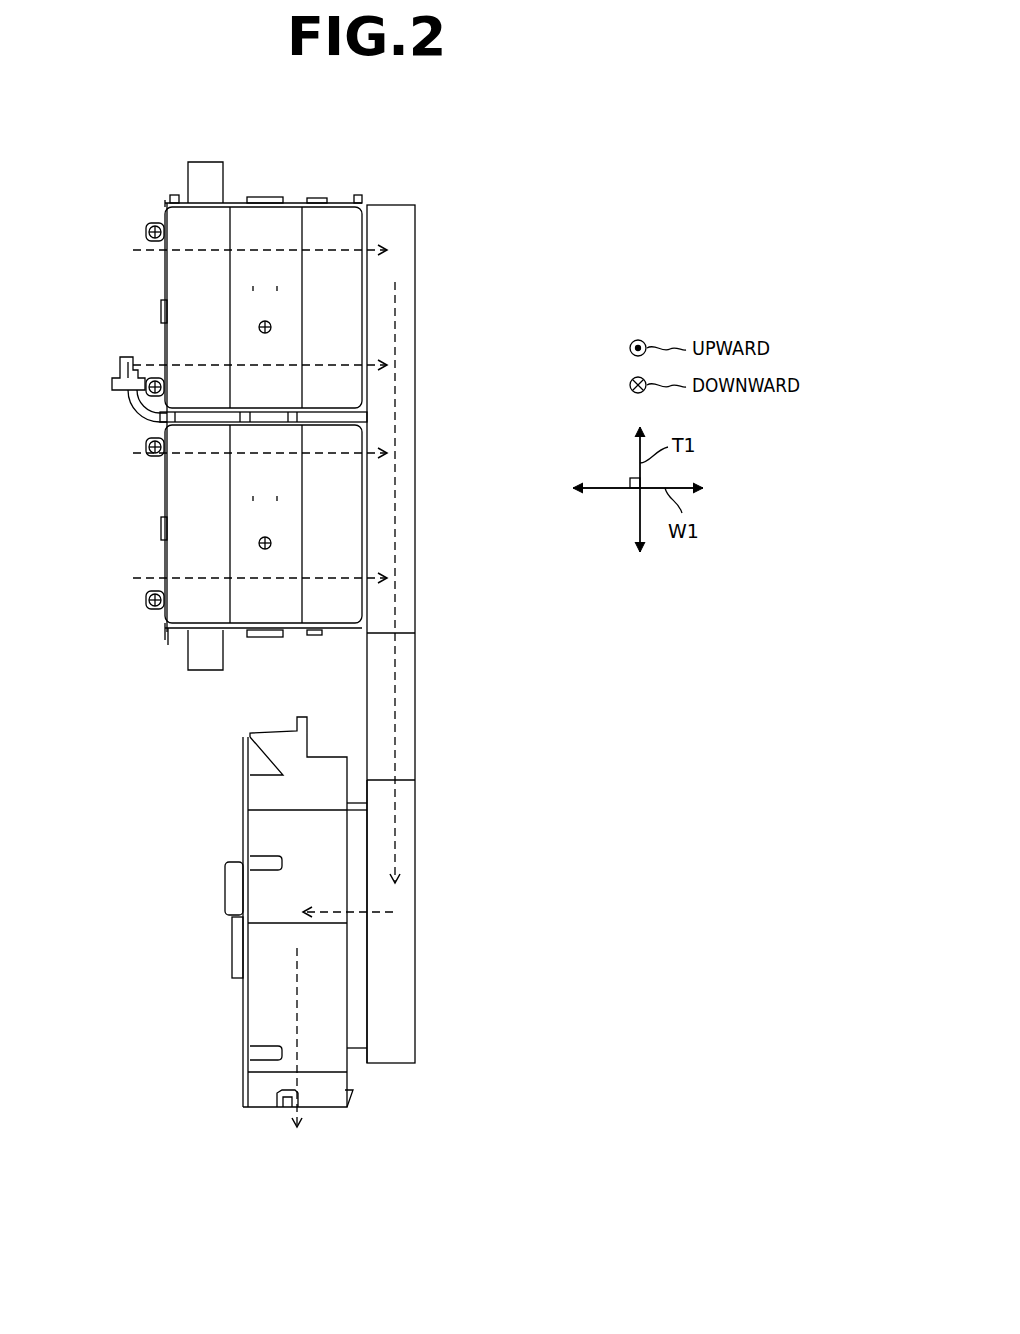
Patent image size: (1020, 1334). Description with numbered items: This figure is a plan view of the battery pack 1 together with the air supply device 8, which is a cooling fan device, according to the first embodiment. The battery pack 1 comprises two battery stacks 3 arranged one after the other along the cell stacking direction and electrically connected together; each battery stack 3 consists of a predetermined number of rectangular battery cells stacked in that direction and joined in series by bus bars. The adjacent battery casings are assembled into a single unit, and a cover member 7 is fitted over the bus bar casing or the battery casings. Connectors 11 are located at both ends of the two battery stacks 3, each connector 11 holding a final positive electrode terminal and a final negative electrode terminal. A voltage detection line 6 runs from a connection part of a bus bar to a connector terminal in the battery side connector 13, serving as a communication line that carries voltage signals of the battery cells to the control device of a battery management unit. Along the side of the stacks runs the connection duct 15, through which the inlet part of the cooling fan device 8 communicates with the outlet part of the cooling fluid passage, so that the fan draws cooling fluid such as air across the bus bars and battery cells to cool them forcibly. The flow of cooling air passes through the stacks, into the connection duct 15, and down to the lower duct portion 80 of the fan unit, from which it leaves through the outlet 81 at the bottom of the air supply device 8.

The battery pack 1 is at (357, 155).
The battery stack 3 is at (148, 292).
The voltage detection line 6 is at (138, 415).
The cover member 7 is at (184, 224).
The air supply device 8 is at (227, 800).
The connector 11 is at (205, 177).
The battery side connector 13 is at (112, 385).
The connection duct 15 is at (415, 472).
The duct lower portion 80 is at (417, 921).
The air outlet 81 is at (263, 1108).